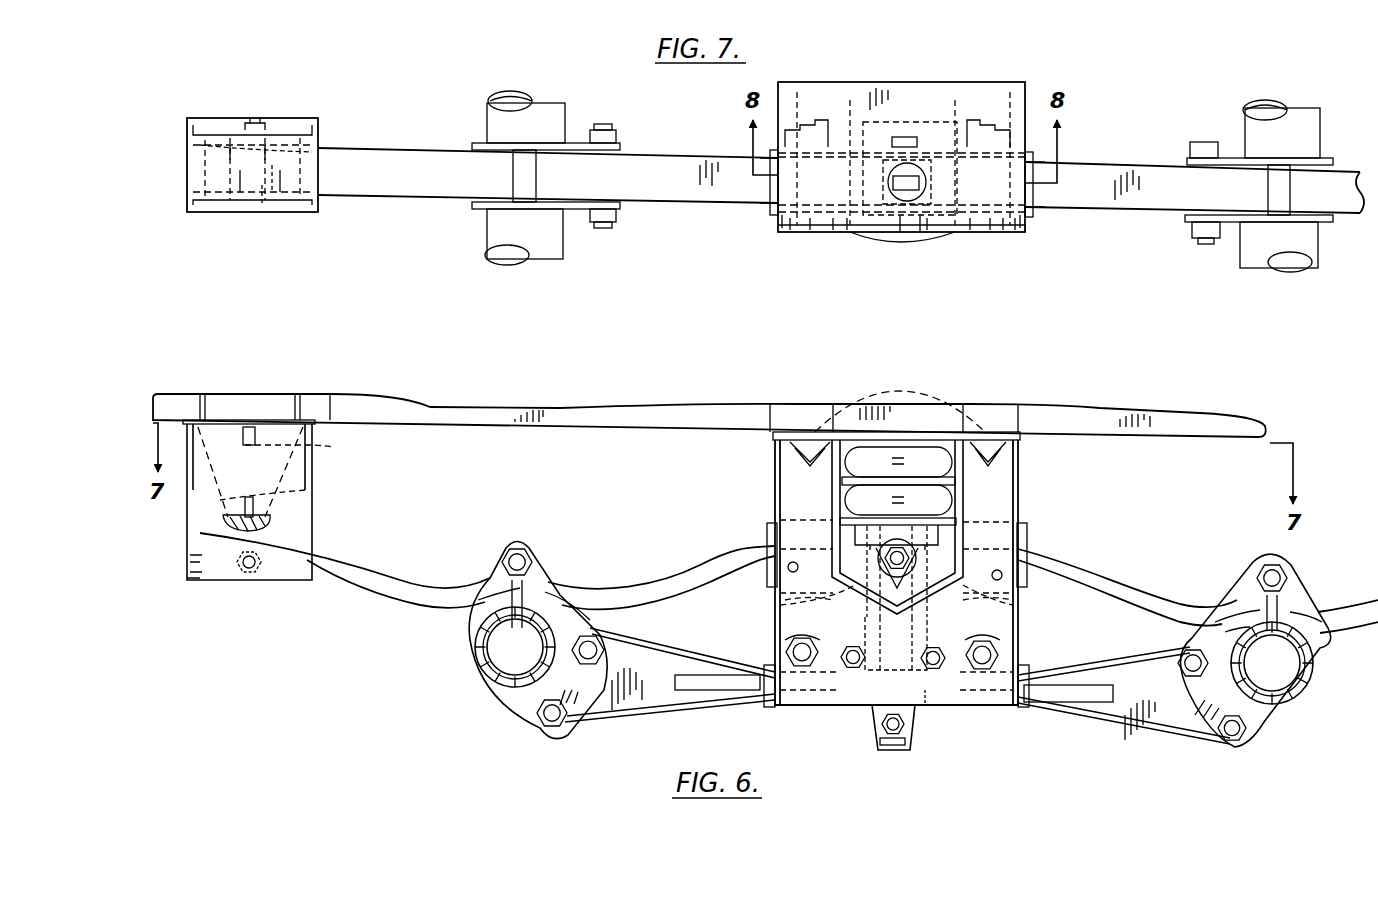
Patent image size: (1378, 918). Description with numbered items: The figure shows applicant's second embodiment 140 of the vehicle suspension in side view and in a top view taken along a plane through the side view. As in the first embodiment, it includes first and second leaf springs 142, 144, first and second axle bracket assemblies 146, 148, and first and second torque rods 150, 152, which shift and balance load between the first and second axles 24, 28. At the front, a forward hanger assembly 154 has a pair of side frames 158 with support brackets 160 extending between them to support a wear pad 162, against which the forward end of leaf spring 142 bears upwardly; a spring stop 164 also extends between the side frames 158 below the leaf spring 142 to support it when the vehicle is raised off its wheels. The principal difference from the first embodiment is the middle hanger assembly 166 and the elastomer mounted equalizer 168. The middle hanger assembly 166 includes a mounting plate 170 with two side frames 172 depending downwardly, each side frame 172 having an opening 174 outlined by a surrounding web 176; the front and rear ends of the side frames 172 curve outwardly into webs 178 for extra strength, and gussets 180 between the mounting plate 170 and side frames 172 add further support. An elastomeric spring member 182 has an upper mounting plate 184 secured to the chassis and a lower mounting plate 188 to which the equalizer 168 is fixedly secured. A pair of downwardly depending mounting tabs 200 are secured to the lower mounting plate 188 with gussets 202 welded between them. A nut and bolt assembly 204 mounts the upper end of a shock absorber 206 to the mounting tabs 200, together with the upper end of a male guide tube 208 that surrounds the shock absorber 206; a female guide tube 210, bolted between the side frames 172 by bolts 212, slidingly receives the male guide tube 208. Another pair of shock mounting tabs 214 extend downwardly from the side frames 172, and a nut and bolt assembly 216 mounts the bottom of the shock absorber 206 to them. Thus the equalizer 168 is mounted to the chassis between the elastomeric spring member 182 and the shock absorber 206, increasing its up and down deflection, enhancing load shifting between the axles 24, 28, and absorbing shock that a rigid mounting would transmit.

In FIG. 7, the first axle 24 is at (492, 242).
In FIG. 6, the first axle 24 is at (490, 678).
In FIG. 7, the second axle 28 is at (1260, 252).
In FIG. 6, the second axle 28 is at (1314, 663).
In FIG. 7, the second embodiment 140 is at (722, 250).
In FIG. 6, the second embodiment 140 is at (636, 726).
In FIG. 7, the first leaf spring 142 is at (406, 190).
In FIG. 6, the first leaf spring 142 is at (389, 577).
In FIG. 7, the second leaf spring 144 is at (1118, 166).
In FIG. 6, the second leaf spring 144 is at (1130, 597).
In FIG. 7, the first axle bracket assembly 146 is at (572, 128).
In FIG. 6, the first axle bracket assembly 146 is at (548, 562).
In FIG. 7, the second axle bracket assembly 148 is at (1238, 148).
In FIG. 6, the second axle bracket assembly 148 is at (1300, 576).
In FIG. 6, the first torque rod 150 is at (678, 646).
In FIG. 6, the second torque rod 152 is at (1095, 660).
In FIG. 6, the forward hanger assembly 154 is at (273, 594).
In FIG. 7, the side frames 158 is at (210, 138).
In FIG. 6, the side frames 158 is at (227, 437).
In FIG. 7, the support brackets 160 is at (312, 156).
In FIG. 6, the support brackets 160 is at (300, 490).
In FIG. 7, the wear pad 162 is at (278, 204).
In FIG. 6, the wear pad 162 is at (292, 514).
In FIG. 7, the spring stop 164 is at (262, 214).
In FIG. 6, the spring stop 164 is at (248, 570).
In FIG. 6, the middle hanger assembly 166 is at (855, 706).
In FIG. 6, the equalizer 168 is at (1032, 524).
In FIG. 7, the mounting plate 170 is at (995, 85).
In FIG. 6, the mounting plate 170 is at (1018, 440).
In FIG. 7, the side frames 172 is at (796, 118).
In FIG. 6, the side frames 172 is at (1008, 472).
In FIG. 6, the opening 174 is at (868, 590).
In FIG. 7, the web 176 is at (848, 92).
In FIG. 6, the web 176 is at (930, 598).
In FIG. 7, the webs 178 is at (786, 236).
In FIG. 6, the webs 178 is at (790, 480).
In FIG. 6, the gussets 180 is at (709, 417).
In FIG. 6, the elastomeric spring member 182 is at (845, 462).
In FIG. 7, the upper mounting plate 184 is at (872, 246).
In FIG. 6, the upper mounting plate 184 is at (928, 432).
In FIG. 6, the lower mounting plate 188 is at (840, 522).
In FIG. 6, the mounting tabs 200 is at (778, 608).
In FIG. 7, the gussets 202 is at (892, 150).
In FIG. 6, the gussets 202 is at (866, 532).
In FIG. 6, the nut and bolt assembly 204 is at (1005, 580).
In FIG. 7, the shock absorber 206 is at (925, 205).
In FIG. 6, the shock absorber 206 is at (871, 720).
In FIG. 6, the male guide tube 208 is at (926, 706).
In FIG. 7, the female guide tube 210 is at (865, 150).
In FIG. 6, the female guide tube 210 is at (778, 636).
In FIG. 6, the bolts 212 is at (985, 640).
In FIG. 6, the shock mounting tabs 214 is at (898, 738).
In FIG. 6, the nut and bolt assembly 216 is at (906, 727).